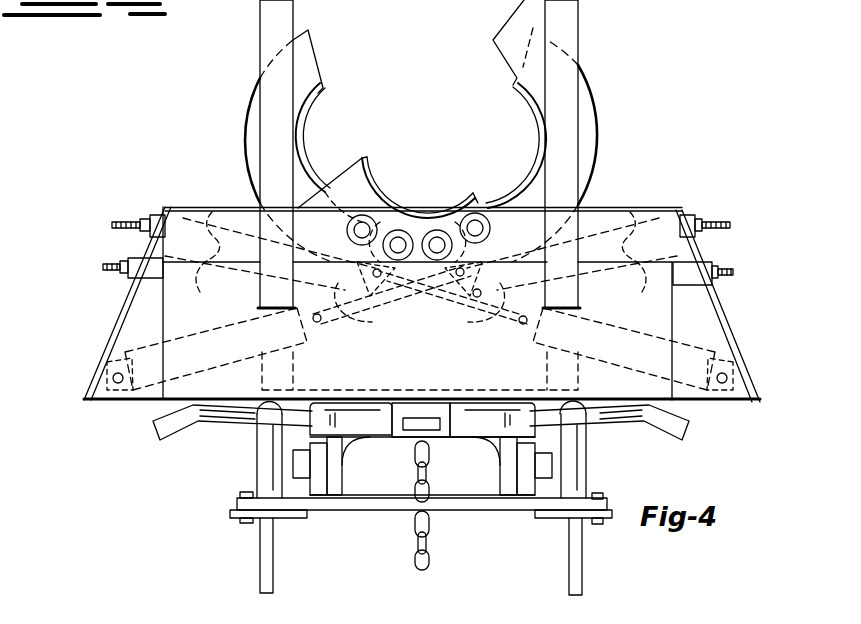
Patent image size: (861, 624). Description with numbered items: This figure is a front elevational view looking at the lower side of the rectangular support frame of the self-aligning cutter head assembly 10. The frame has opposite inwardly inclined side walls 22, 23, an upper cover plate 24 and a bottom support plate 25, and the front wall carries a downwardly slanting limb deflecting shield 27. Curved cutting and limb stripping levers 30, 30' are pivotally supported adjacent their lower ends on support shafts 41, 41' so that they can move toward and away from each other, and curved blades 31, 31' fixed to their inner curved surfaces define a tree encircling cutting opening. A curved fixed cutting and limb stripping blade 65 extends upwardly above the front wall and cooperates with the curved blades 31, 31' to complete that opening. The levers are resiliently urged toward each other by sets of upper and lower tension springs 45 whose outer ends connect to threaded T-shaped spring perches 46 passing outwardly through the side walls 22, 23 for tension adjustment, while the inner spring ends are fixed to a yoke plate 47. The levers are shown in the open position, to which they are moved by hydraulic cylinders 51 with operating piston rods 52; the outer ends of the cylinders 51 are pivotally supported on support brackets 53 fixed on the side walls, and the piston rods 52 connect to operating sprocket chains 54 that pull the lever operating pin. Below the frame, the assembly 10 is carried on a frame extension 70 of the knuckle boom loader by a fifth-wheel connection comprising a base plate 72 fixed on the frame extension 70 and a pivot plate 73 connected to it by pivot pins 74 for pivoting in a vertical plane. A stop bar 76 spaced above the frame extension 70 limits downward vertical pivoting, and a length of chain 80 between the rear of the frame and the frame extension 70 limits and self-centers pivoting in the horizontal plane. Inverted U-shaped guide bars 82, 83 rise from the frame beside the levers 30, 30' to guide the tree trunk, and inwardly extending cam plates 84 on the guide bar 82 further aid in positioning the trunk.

The self-aligning cutter head assembly 10 is at (693, 121).
The side wall 22 is at (728, 322).
The side wall 23 is at (128, 302).
The upper cover plate 24 is at (238, 206).
The bottom support plate 25 is at (363, 390).
The limb deflecting shield 27 is at (440, 372).
The curved cutting and limb stripping lever 30 is at (580, 151).
The curved cutting and limb stripping lever 30' is at (255, 151).
The curved blade 31 is at (514, 145).
The curved blade 31' is at (387, 152).
The support shaft 41 is at (482, 194).
The support shaft 41' is at (381, 193).
The tension springs 45 is at (212, 210).
The T-shaped spring perches 46 is at (148, 232).
The yoke plate 47 is at (420, 317).
The hydraulic cylinders 51 is at (198, 350).
The operating piston rods 52 is at (390, 318).
The support brackets 53 is at (115, 399).
The operating sprocket chains 54 is at (390, 300).
The curved fixed cutting and limb stripping blade 65 is at (402, 228).
The frame extension 70 is at (260, 557).
The base plate 72 is at (455, 508).
The pivot plate 73 is at (462, 428).
The pivot pins 74 is at (292, 462).
The stop bar 76 is at (230, 428).
The chain 80 is at (414, 545).
The inverted U-shaped guide bar 82 is at (586, 32).
The inverted U-shaped guide bar 83 is at (250, 30).
The cam plates 84 is at (505, 30).